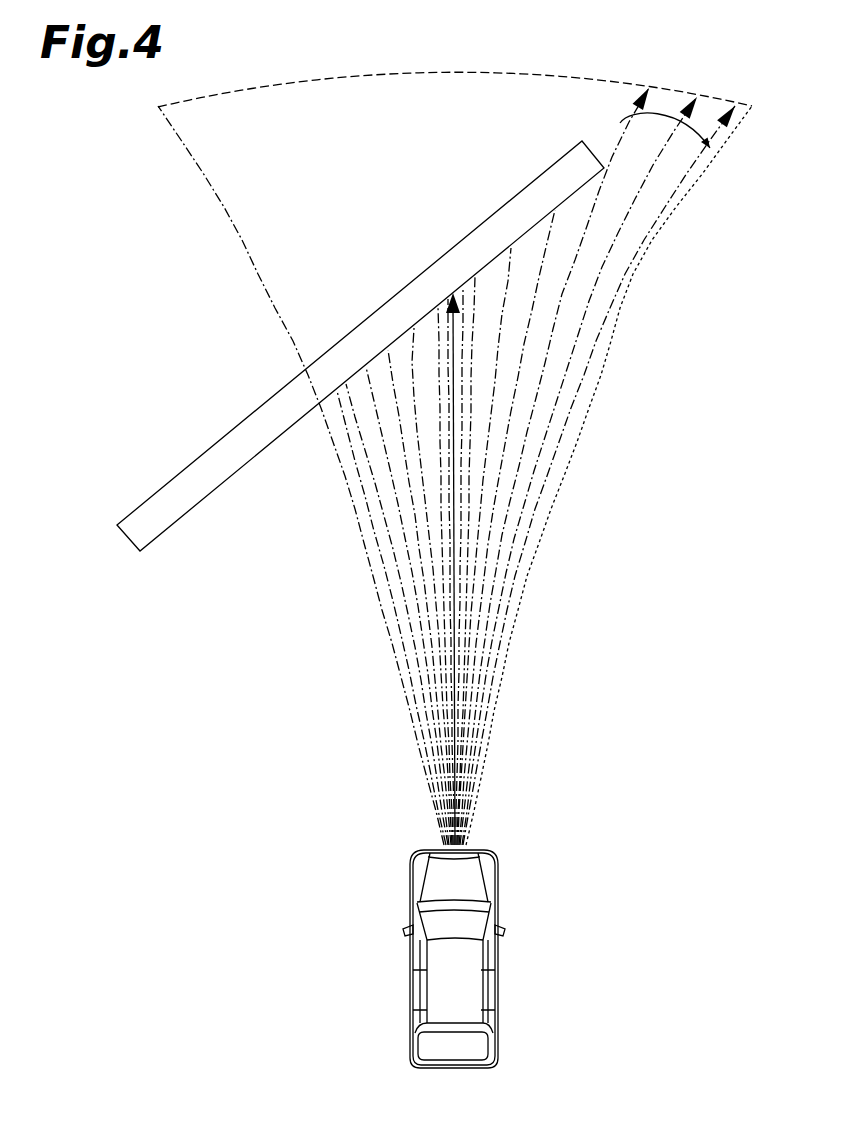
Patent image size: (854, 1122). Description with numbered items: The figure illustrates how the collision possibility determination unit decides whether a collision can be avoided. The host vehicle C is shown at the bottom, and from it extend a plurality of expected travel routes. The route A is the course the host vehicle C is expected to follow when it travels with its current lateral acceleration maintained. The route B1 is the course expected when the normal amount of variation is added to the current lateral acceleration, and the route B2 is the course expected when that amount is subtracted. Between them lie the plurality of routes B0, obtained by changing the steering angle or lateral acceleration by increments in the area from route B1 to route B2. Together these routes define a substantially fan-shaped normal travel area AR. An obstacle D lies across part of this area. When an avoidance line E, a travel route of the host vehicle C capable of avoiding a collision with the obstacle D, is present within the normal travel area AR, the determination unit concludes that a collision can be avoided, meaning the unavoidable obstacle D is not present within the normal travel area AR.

The route (course) A is at (451, 328).
The plurality of routes (courses) B0 is at (367, 457).
The route (course) B1 is at (693, 170).
The route (course) B2 is at (333, 423).
The obstacle D is at (150, 553).
The avoidance line E is at (708, 128).
The normal travel area AR is at (499, 681).
The host vehicle C is at (498, 987).